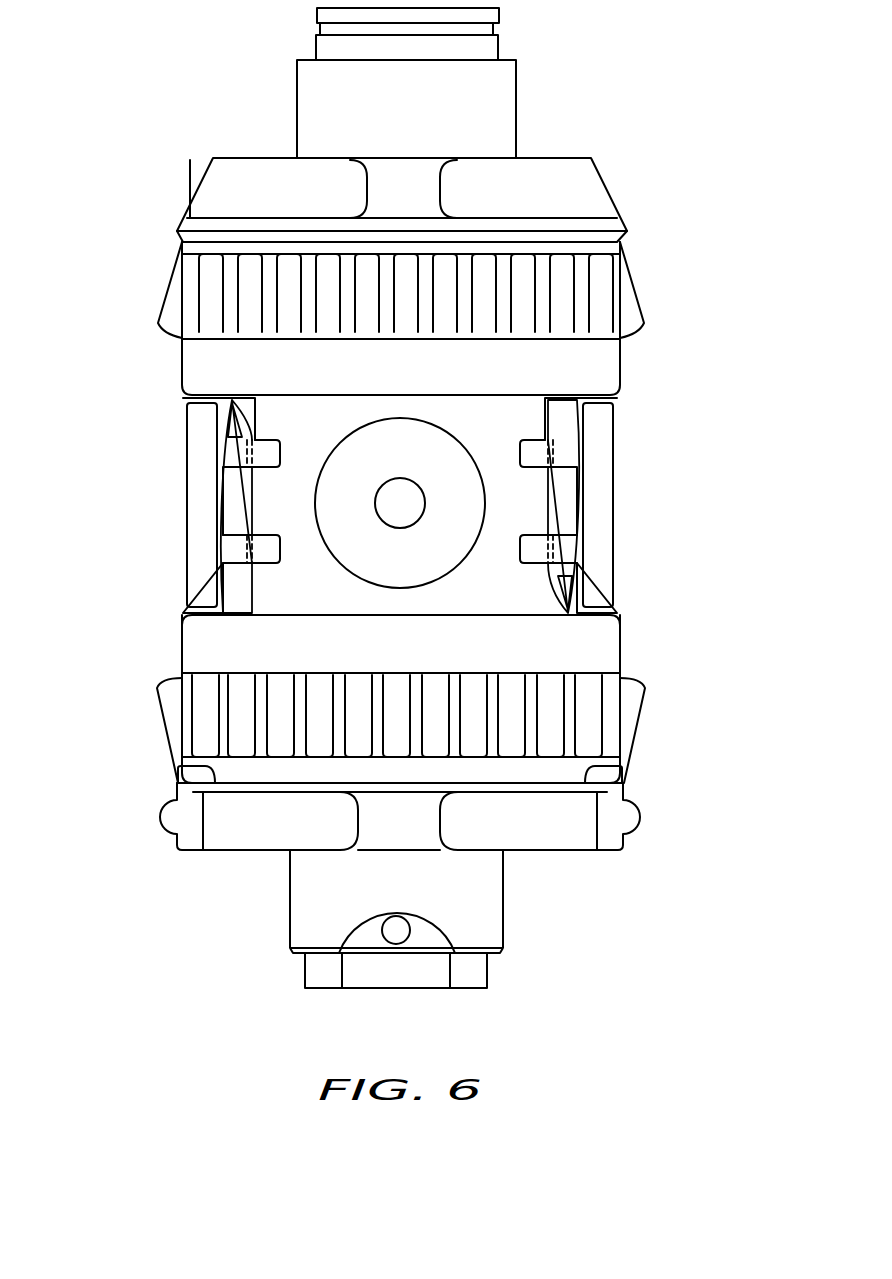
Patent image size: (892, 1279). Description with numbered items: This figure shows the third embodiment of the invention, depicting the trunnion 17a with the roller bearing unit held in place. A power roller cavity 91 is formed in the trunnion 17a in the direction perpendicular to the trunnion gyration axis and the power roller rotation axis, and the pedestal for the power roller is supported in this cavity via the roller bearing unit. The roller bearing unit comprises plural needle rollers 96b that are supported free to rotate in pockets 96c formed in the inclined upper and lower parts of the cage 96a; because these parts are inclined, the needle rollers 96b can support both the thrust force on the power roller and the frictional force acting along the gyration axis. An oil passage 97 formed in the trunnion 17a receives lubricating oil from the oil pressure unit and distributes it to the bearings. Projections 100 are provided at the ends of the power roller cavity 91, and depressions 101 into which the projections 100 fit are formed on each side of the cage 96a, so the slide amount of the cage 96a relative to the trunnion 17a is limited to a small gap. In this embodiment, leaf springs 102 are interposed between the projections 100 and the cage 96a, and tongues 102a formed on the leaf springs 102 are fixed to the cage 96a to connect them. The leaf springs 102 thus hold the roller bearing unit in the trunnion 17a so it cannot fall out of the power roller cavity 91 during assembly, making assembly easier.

The cage 96a is at (592, 375).
The needle rollers 96b is at (253, 315).
The pockets 96c is at (207, 300).
The projections 100 is at (205, 557).
The depressions 101 is at (248, 412).
The leaf springs 102 is at (217, 498).
The tongues 102a is at (242, 457).
The oil passage 97 is at (387, 493).
The power roller cavity 91 is at (183, 772).
The trunnion 17a is at (540, 832).